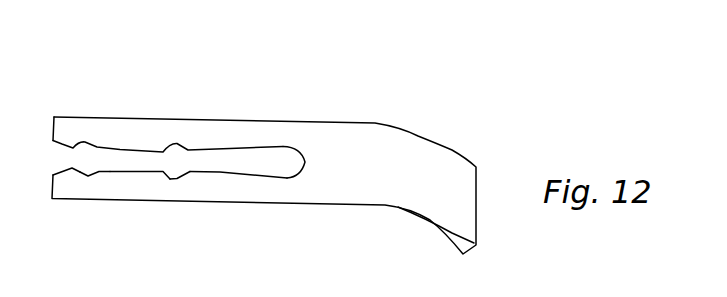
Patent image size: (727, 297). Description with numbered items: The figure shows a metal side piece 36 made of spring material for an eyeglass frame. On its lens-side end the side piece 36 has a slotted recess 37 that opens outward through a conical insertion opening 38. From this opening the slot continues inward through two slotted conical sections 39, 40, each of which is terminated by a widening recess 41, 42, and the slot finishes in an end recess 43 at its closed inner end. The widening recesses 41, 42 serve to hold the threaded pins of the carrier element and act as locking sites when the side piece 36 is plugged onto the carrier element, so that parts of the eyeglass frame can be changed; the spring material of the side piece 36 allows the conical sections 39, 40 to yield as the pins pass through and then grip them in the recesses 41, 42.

The metal side piece 36 is at (382, 123).
The slotted recess 37 is at (255, 162).
The conical insertion opening 38 is at (61, 175).
The slotted conical section 39 is at (126, 172).
The slotted conical section 40 is at (231, 145).
The widening recess 41 is at (90, 176).
The widening recess 42 is at (177, 178).
The end recess 43 is at (297, 173).